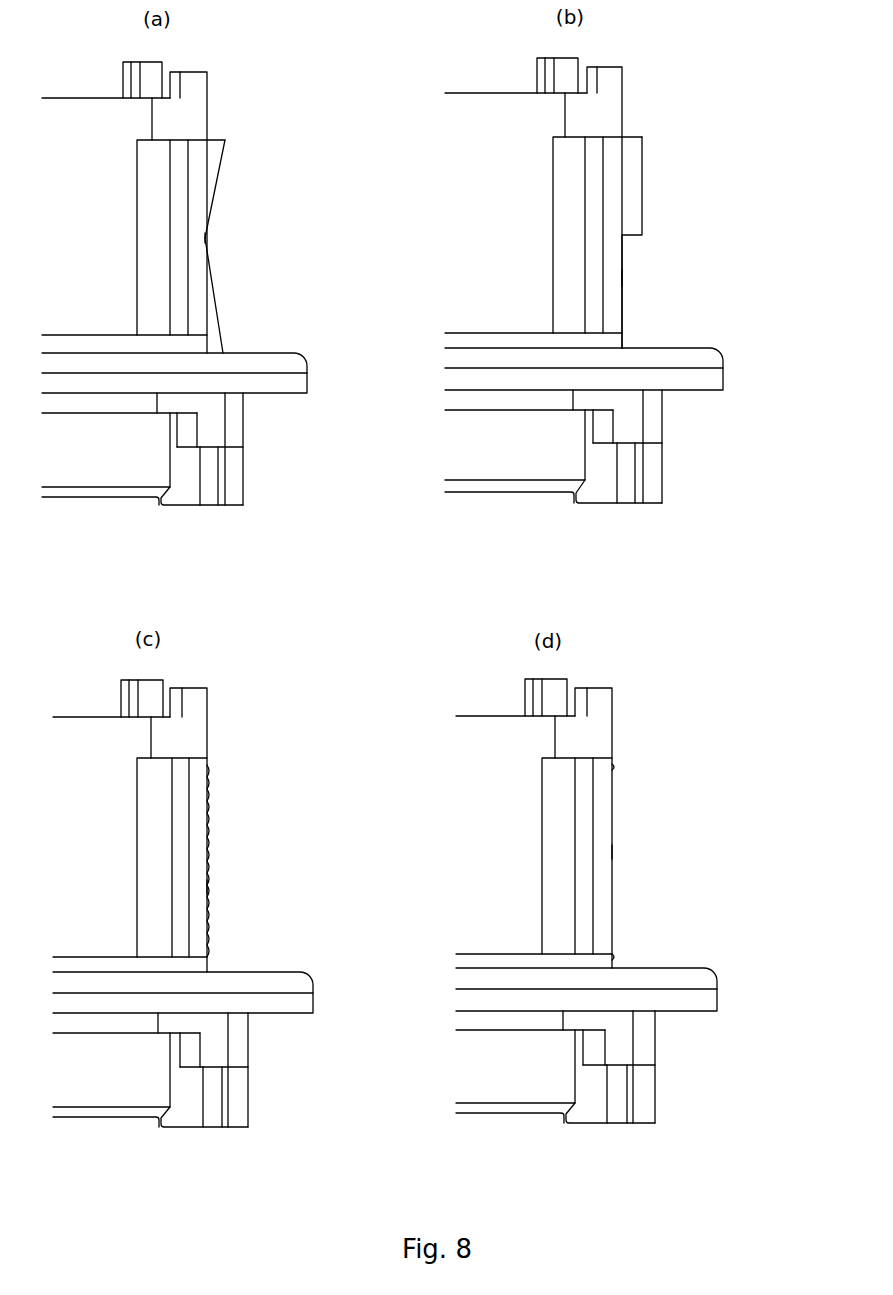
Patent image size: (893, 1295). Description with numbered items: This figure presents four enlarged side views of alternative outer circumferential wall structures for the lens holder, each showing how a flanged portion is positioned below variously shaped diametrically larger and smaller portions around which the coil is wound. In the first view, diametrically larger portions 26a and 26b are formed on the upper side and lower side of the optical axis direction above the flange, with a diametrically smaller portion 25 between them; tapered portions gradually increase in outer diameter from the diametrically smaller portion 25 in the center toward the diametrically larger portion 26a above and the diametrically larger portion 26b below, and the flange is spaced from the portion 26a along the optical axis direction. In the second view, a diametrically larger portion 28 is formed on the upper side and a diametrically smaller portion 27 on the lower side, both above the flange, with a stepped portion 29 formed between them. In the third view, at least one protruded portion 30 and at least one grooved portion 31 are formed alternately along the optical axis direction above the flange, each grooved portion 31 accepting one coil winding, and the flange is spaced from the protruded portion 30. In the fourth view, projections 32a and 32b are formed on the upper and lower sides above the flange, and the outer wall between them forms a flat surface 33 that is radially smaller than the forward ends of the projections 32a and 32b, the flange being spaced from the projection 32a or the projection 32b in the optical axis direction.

The diametrically smaller portion 25 is at (206, 238).
The diametrically larger portion 26a is at (208, 155).
The diametrically larger portion 26b is at (210, 338).
The diametrically smaller portion 27 is at (623, 278).
The diametrically larger portion 28 is at (632, 170).
The stepped portion 29 is at (638, 253).
The protruded portion 30 is at (210, 768).
The grooved portion 31 is at (208, 887).
The projection 32a is at (613, 767).
The projection 32b is at (613, 957).
The flat surface 33 is at (613, 852).